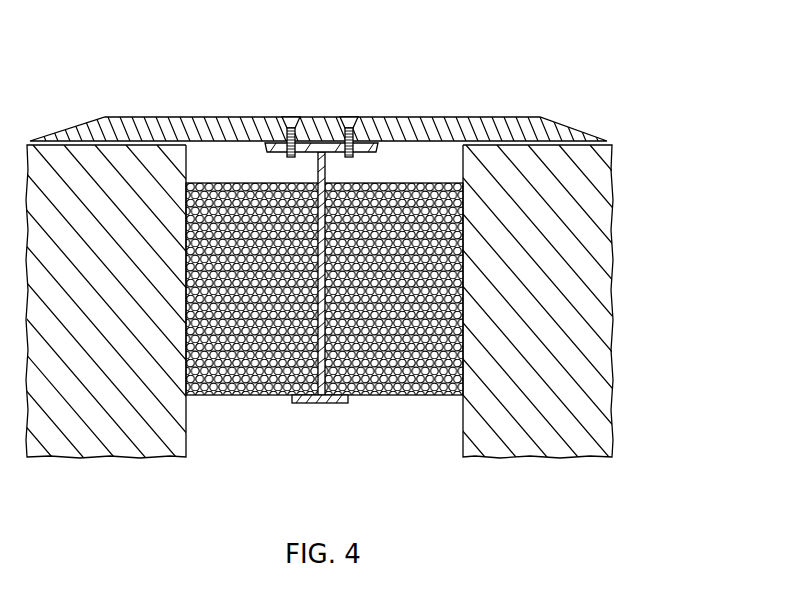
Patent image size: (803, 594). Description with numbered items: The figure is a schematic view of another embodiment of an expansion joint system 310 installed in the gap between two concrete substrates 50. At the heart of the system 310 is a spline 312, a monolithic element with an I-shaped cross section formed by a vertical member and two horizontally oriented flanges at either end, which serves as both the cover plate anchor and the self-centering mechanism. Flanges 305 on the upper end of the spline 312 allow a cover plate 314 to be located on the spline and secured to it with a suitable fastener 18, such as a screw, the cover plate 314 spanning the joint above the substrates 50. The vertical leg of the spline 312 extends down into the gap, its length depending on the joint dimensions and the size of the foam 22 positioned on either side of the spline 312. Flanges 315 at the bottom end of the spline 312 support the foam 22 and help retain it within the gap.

The expansion joint system 310 is at (652, 88).
The cover plate 314 is at (425, 116).
The fastener 18 is at (285, 117).
The flanges 305 is at (378, 148).
The spline 312 is at (325, 321).
The flanges 315 is at (302, 403).
The foam 22 is at (207, 397).
The concrete substrates 50 is at (99, 459).